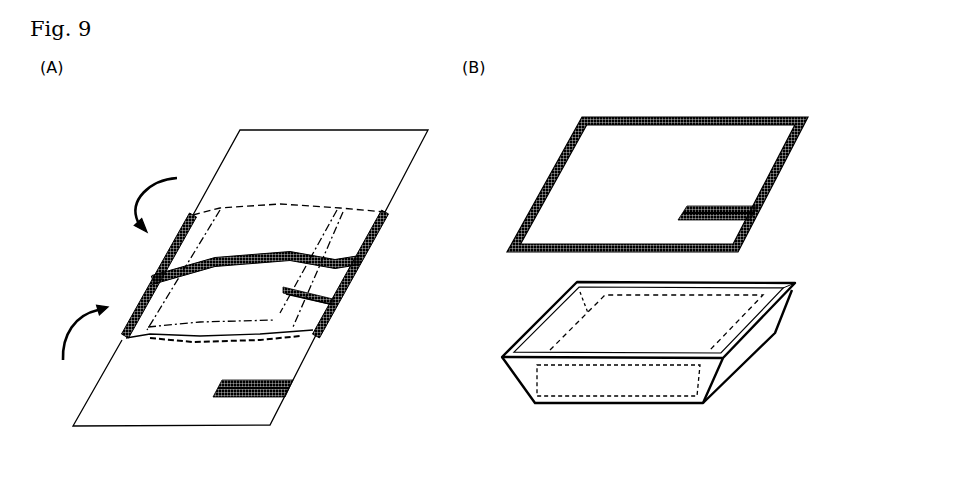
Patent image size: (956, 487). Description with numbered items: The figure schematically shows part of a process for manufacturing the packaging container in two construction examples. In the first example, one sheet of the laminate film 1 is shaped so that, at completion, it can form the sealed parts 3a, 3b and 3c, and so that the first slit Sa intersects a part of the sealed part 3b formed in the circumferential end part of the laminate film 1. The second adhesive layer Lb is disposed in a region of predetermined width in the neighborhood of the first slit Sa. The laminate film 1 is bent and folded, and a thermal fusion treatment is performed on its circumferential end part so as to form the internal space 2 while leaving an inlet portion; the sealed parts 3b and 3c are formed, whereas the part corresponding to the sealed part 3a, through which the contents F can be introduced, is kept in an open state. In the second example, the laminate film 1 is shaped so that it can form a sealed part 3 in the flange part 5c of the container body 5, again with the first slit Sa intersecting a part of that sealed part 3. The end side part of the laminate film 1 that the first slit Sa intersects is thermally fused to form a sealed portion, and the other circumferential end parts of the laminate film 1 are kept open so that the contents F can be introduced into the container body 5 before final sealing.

The laminate film 1 is at (222, 120).
The internal space 2 is at (355, 220).
The sealed portion 3 is at (770, 180).
The sealed portion 3a is at (157, 283).
The sealed portion 3b is at (362, 258).
The sealed portion 3c is at (230, 270).
The container body 5 is at (649, 357).
The flange part 5c is at (790, 292).
The contents F is at (607, 395).
The second adhesive layer Lb is at (290, 290).
The first slit Sa is at (317, 300).